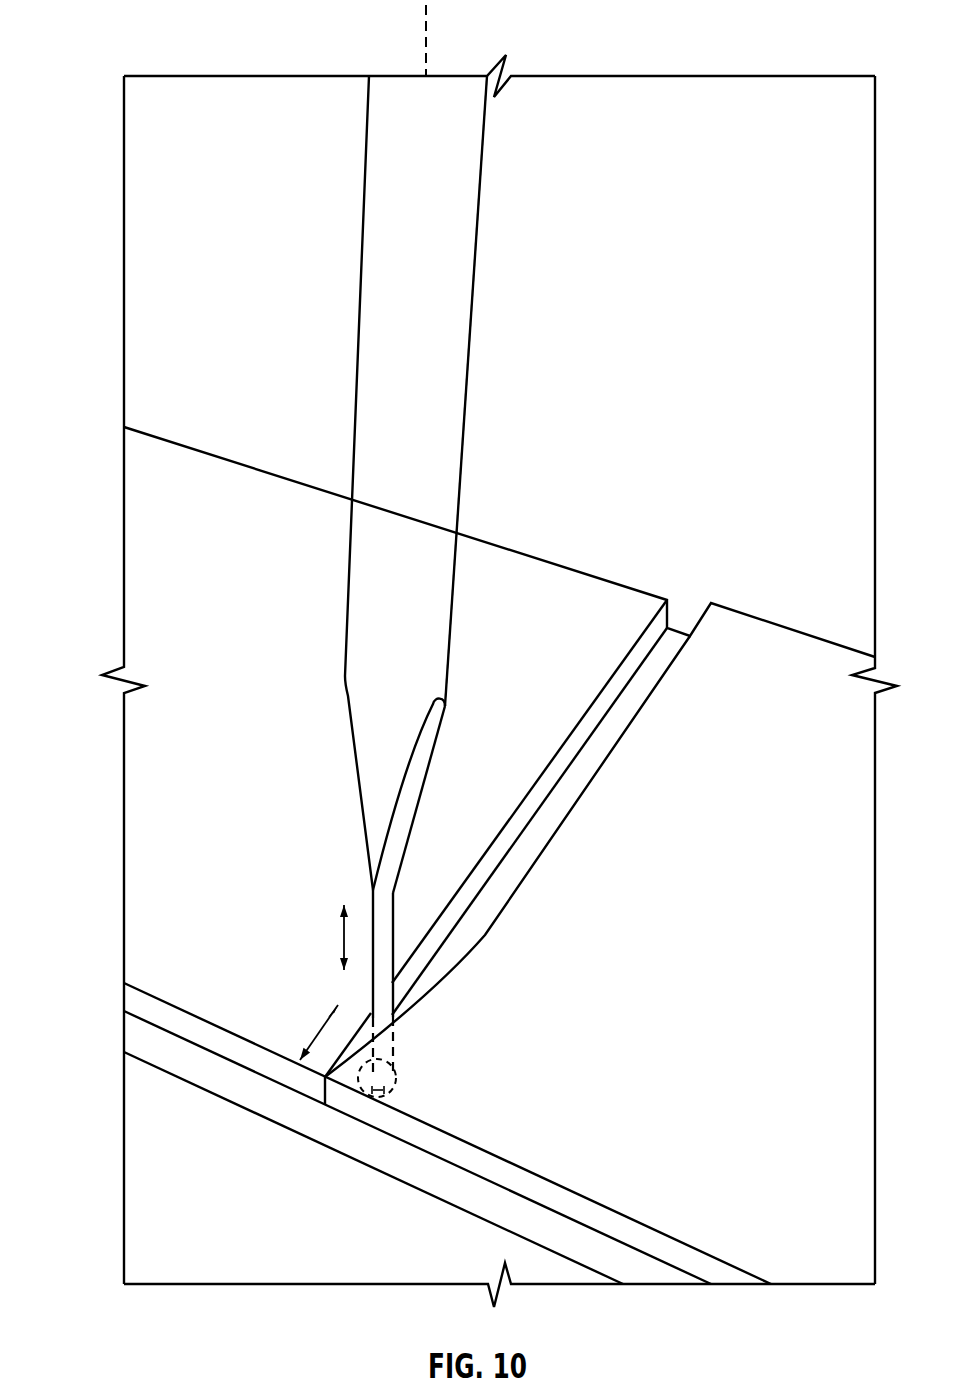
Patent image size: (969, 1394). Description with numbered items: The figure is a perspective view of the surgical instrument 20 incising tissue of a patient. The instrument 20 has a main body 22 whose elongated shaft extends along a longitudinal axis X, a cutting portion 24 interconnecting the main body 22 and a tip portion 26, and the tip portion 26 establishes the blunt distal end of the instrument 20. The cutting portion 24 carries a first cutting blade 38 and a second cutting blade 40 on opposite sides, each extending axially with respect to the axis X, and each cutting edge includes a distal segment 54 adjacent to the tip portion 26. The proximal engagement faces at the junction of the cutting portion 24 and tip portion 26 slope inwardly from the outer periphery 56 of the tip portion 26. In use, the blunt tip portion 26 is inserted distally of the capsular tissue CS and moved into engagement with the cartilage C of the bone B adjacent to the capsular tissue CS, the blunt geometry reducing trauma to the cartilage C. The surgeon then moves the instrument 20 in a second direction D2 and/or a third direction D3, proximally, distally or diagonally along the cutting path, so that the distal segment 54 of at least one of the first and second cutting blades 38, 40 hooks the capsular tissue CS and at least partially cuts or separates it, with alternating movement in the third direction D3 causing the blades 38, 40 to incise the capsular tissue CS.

The surgical instrument 20 is at (166, 44).
The main body 22 is at (489, 179).
The cutting portion 24 is at (328, 886).
The tip portion 26 is at (330, 1173).
The first cutting blade 38 is at (371, 992).
The second cutting blade 40 is at (393, 947).
The distal segment 54 is at (378, 1093).
The outer periphery 56 is at (397, 1072).
The axis X is at (427, 48).
The capsular tissue CS is at (143, 935).
The cartilage C is at (140, 1038).
The bone B is at (138, 1097).
The second direction D2 is at (326, 1018).
The third direction D3 is at (343, 937).